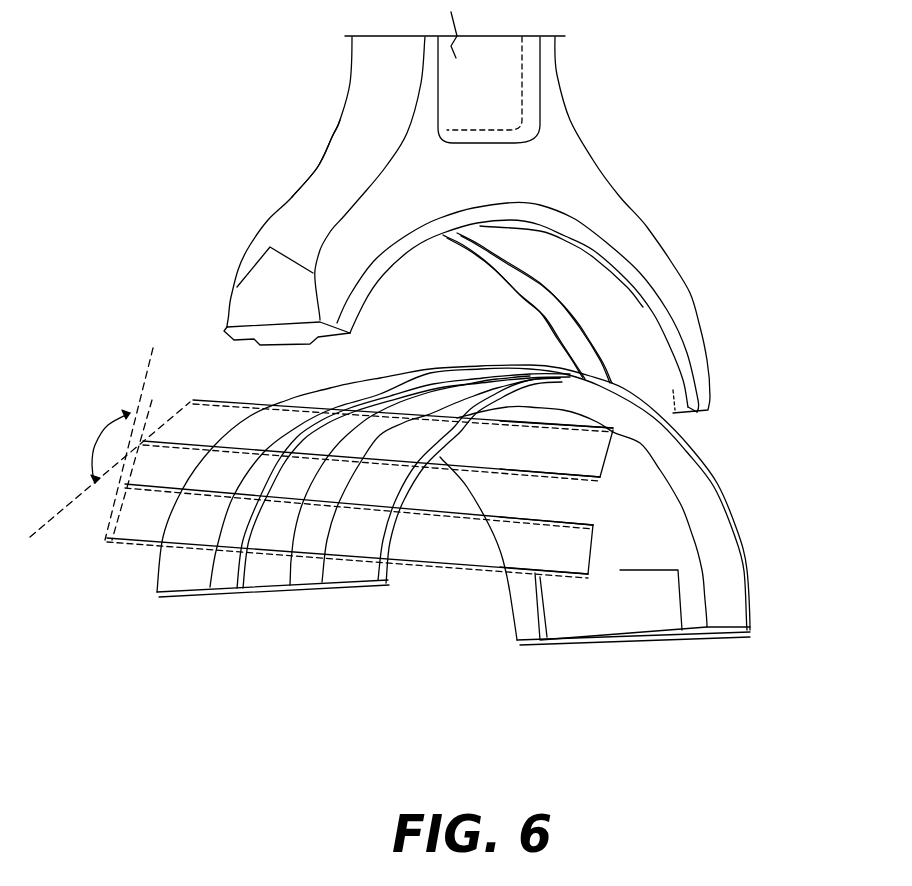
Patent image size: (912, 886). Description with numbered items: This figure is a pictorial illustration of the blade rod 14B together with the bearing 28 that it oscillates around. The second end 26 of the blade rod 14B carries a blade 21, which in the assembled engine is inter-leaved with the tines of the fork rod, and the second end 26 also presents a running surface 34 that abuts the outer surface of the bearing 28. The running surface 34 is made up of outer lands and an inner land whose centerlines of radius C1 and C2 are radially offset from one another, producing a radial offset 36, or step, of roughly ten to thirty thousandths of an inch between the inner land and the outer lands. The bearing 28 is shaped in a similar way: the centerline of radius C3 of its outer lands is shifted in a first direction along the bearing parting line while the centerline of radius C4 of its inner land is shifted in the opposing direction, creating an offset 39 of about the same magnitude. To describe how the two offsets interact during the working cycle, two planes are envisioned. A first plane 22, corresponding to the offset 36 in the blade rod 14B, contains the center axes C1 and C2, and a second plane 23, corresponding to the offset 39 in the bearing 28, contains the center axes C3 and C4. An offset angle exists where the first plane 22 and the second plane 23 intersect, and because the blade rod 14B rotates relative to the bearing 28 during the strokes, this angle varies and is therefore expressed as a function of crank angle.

The blade rod 14B is at (550, 118).
The second end of blade rod 26 is at (393, 143).
The blade 21 is at (350, 266).
The running surface 34 is at (355, 315).
The radial offset 36 is at (650, 397).
The first plane 22 is at (210, 417).
The second plane 23 is at (123, 520).
The offset 39 is at (270, 578).
The bearing 28 is at (747, 558).
The centerline of radius of outer lands C1 is at (568, 480).
The centerline of radius of inner land C2 is at (574, 432).
The centerline of radius of outer lands of bearing C3 is at (566, 527).
The centerline of radius of inner land of bearing C4 is at (560, 583).